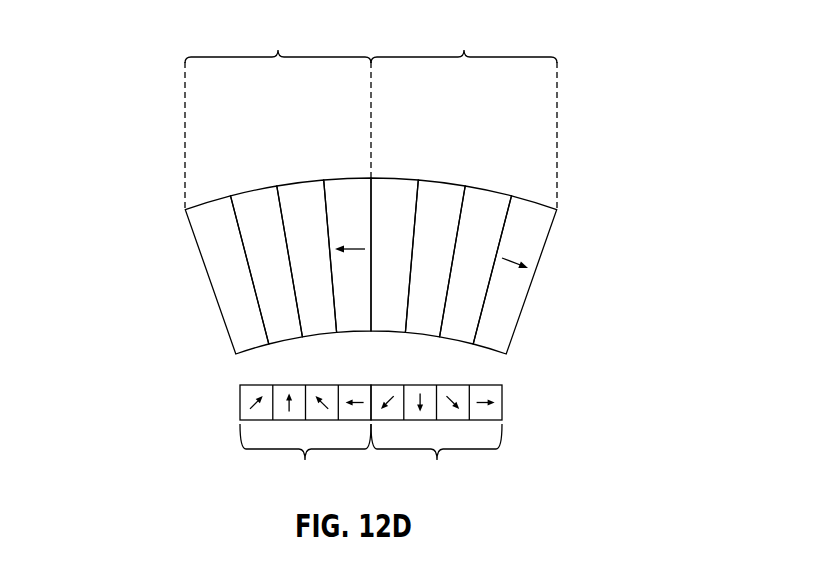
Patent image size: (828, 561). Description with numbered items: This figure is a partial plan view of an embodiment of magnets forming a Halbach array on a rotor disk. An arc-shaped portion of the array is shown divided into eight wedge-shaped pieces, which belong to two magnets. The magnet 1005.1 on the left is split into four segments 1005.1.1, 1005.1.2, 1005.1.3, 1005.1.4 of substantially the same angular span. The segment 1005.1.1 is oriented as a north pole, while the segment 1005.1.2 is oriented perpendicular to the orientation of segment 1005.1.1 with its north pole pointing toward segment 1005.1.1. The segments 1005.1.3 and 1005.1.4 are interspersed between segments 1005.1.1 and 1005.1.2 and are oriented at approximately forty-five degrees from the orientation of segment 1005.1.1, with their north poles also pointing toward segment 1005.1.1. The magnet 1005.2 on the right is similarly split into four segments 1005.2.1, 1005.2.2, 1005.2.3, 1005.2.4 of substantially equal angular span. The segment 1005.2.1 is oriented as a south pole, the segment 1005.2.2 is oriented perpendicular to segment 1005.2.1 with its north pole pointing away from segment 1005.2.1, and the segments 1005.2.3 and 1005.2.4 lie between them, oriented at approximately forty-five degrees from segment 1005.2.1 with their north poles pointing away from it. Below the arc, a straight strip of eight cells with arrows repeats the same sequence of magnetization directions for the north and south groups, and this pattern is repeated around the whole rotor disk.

The magnet 1005.1 is at (278, 48).
The magnet 1005.2 is at (464, 48).
The segment 1005.1.1 is at (250, 187).
The segment 1005.1.2 is at (337, 177).
The segment 1005.1.3 is at (205, 202).
The segment 1005.1.4 is at (315, 182).
The segment 1005.2.1 is at (453, 180).
The segment 1005.2.2 is at (537, 203).
The segment 1005.2.3 is at (408, 180).
The segment 1005.2.4 is at (488, 185).